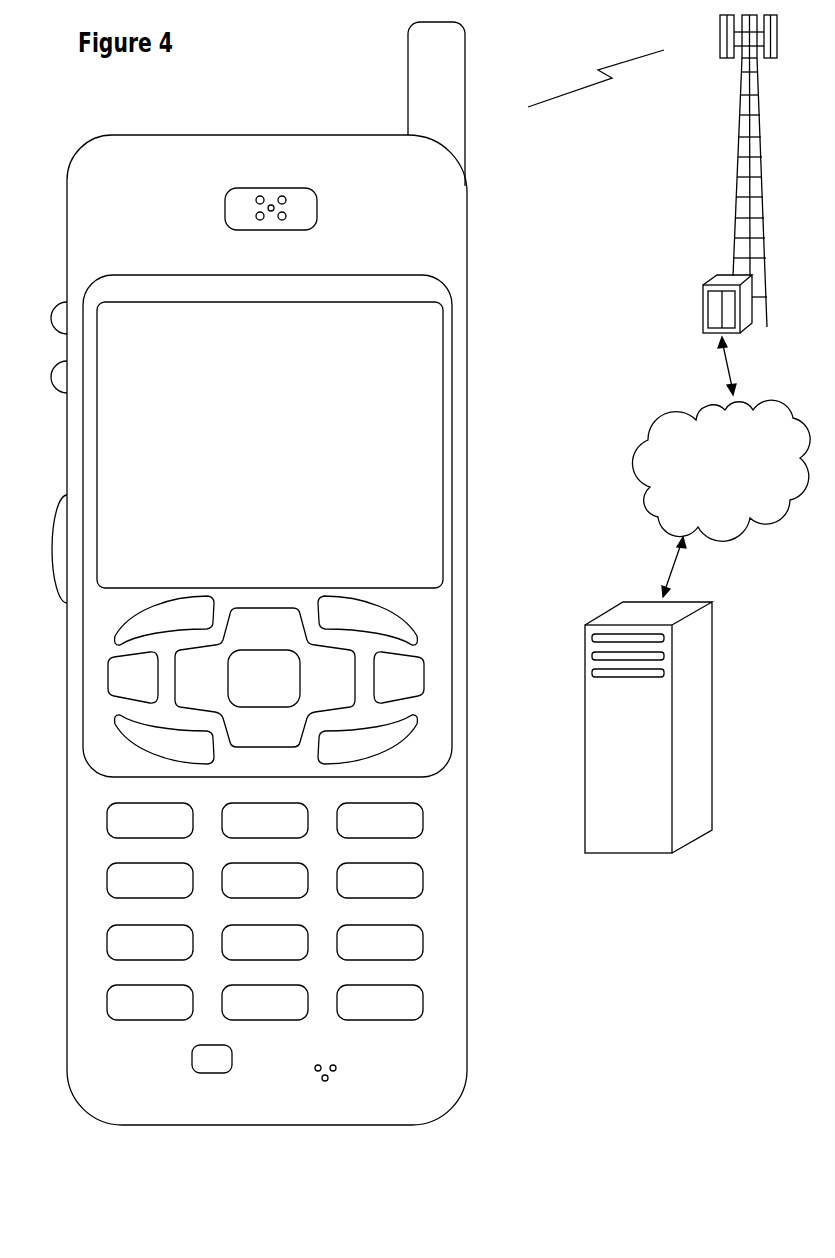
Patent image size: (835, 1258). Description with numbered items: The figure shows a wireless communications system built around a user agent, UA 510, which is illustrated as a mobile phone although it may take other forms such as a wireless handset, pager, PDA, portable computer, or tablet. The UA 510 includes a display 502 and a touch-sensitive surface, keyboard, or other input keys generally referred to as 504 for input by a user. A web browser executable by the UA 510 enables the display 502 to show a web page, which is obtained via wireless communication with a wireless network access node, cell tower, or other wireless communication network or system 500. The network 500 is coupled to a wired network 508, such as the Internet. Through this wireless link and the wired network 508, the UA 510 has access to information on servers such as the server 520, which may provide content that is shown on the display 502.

The wireless communication network or system 500 is at (732, 189).
The display 502 is at (456, 317).
The input keys 504 is at (480, 597).
The wired network 508 is at (650, 518).
The user agent 510 is at (67, 1079).
The server 520 is at (630, 855).